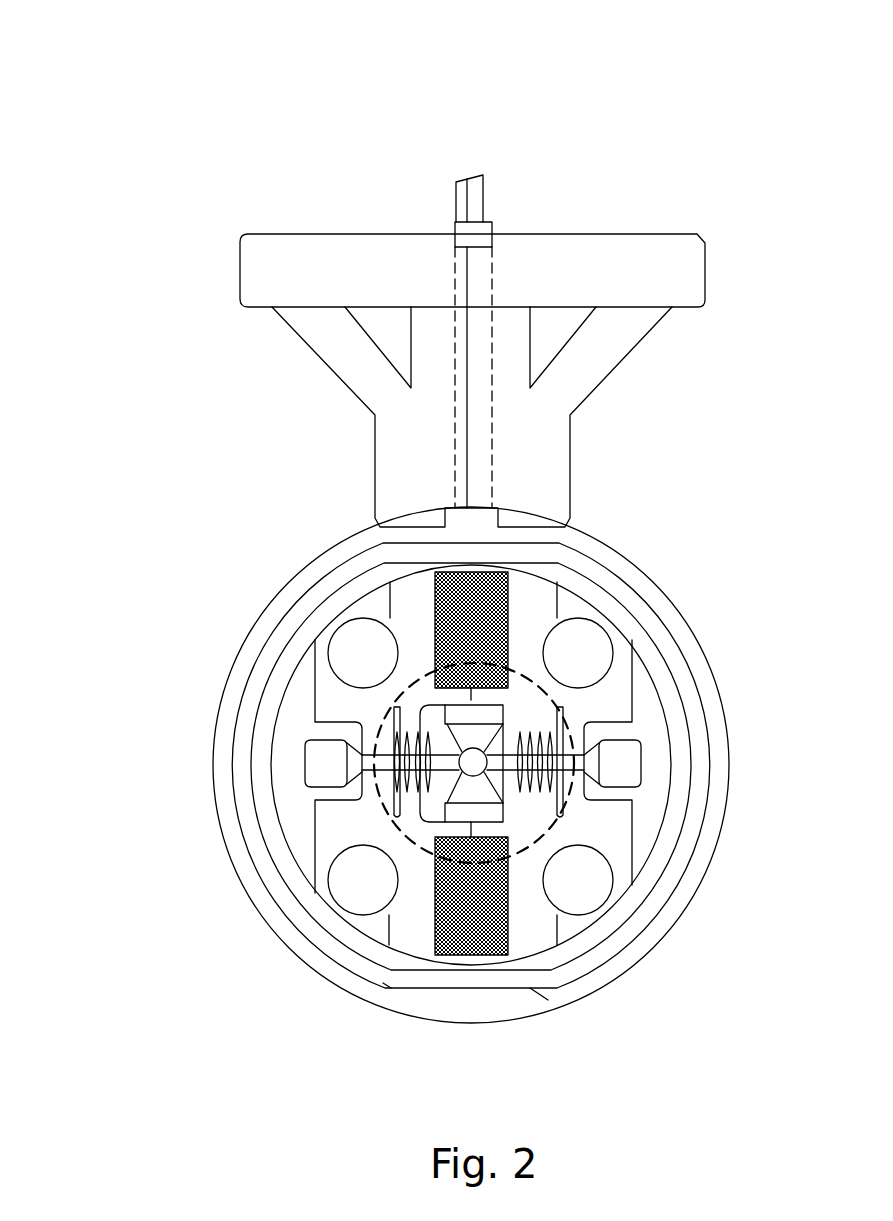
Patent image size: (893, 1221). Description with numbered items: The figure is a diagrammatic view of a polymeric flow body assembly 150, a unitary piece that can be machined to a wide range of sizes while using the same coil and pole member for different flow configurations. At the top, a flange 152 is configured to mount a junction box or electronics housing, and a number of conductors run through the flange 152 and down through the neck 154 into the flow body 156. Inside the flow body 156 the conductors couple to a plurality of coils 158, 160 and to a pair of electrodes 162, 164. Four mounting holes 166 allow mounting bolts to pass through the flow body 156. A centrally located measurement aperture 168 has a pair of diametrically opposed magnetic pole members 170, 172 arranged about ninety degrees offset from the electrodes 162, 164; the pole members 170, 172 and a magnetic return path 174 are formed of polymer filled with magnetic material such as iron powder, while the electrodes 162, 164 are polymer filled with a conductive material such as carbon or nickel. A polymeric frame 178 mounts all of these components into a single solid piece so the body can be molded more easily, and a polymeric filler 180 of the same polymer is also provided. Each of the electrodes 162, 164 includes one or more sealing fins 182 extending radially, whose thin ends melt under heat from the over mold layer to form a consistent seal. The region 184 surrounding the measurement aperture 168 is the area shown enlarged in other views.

The polymeric flow body assembly 150 is at (673, 100).
The flange 152 is at (661, 233).
The neck 154 is at (572, 432).
The flow body 156 is at (655, 582).
The coil 158 is at (436, 607).
The coil 160 is at (432, 806).
The electrode 162 is at (355, 762).
The electrode 164 is at (600, 757).
The mounting holes 166 is at (335, 655).
The measurement aperture 168 is at (505, 733).
The magnetic pole member 170 is at (477, 792).
The magnetic pole member 172 is at (447, 722).
The magnetic return path 174 is at (610, 587).
The polymeric frame 178 is at (386, 955).
The polymeric filler 180 is at (613, 813).
The sealing fins 182 is at (395, 835).
The region 184 is at (463, 905).